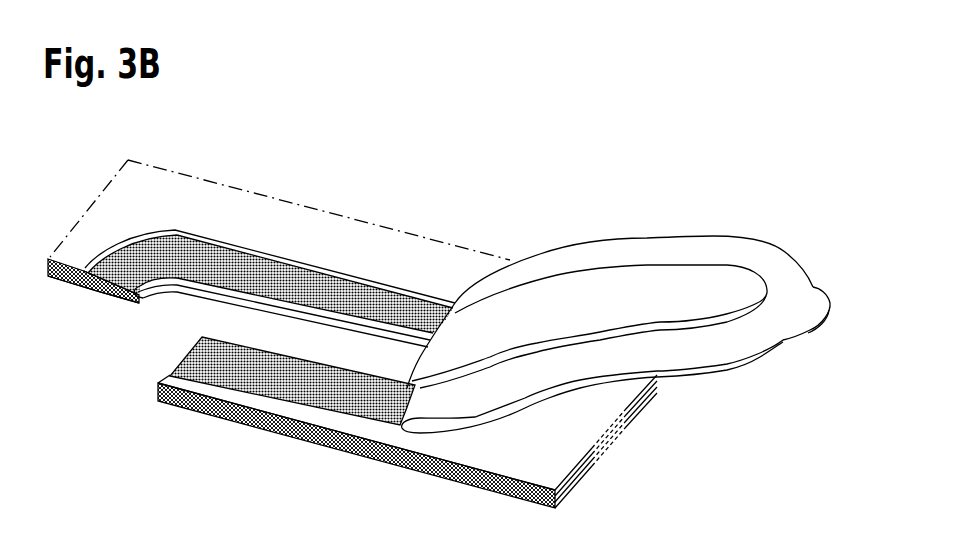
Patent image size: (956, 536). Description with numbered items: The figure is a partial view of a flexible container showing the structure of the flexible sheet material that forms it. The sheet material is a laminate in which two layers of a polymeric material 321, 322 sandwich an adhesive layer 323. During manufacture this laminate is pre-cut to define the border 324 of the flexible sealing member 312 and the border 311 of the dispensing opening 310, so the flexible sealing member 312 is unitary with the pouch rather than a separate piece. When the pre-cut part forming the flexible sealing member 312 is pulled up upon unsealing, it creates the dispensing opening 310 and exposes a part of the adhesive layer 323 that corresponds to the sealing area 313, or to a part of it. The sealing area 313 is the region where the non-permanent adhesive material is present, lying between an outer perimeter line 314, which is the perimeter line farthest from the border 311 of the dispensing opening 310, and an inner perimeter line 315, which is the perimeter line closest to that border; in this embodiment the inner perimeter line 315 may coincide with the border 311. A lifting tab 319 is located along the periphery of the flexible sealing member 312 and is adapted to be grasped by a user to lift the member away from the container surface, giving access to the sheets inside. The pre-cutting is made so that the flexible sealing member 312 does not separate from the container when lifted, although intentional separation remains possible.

The dispensing opening 310 is at (333, 347).
The border of the dispensing opening 311 is at (406, 328).
The flexible sealing member 312 is at (638, 257).
The sealing area 313 is at (273, 270).
The outer perimeter line 314 is at (201, 234).
The inner perimeter line 315 is at (320, 322).
The lifting tab 319 is at (818, 303).
The layer of polymeric material 321 is at (56, 258).
The layer of polymeric material 322 is at (58, 279).
The adhesive layer 323 is at (146, 300).
The border of the flexible sealing member 324 is at (771, 243).